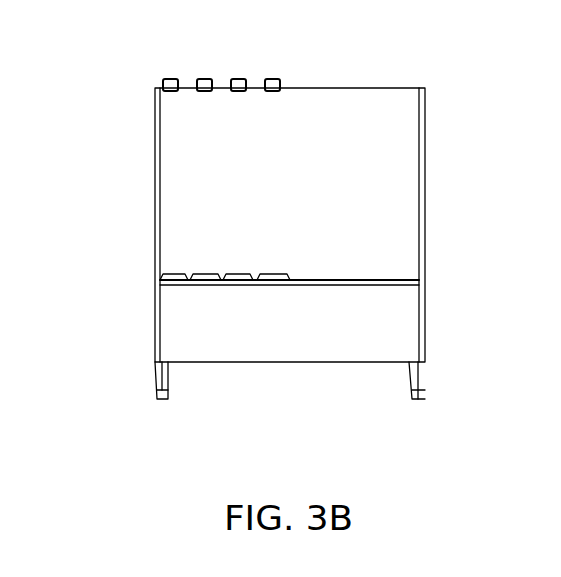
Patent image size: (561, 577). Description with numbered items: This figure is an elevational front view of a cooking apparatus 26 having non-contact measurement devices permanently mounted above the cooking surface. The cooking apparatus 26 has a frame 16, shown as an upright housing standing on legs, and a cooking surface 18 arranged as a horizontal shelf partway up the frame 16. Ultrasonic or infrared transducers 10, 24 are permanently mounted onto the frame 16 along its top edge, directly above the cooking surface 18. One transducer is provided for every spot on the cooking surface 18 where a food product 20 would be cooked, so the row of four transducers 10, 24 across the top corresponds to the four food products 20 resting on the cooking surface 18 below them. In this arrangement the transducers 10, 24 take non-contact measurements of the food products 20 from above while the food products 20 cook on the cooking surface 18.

The ultrasonic transducer 10 is at (249, 60).
The infrared transducer 24 is at (275, 80).
The frame 16 is at (425, 127).
The cooking surface 18 is at (345, 280).
The food product 20 is at (267, 274).
The cooking apparatus 26 is at (133, 98).